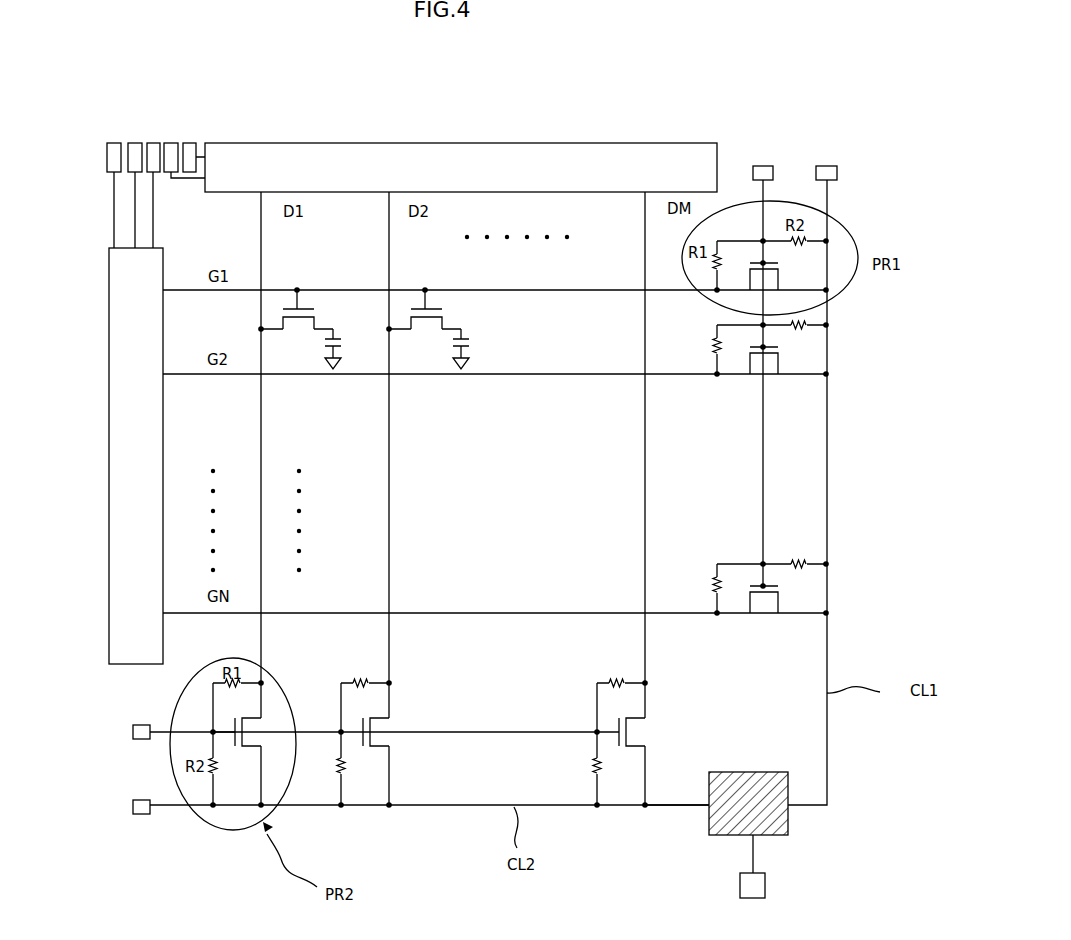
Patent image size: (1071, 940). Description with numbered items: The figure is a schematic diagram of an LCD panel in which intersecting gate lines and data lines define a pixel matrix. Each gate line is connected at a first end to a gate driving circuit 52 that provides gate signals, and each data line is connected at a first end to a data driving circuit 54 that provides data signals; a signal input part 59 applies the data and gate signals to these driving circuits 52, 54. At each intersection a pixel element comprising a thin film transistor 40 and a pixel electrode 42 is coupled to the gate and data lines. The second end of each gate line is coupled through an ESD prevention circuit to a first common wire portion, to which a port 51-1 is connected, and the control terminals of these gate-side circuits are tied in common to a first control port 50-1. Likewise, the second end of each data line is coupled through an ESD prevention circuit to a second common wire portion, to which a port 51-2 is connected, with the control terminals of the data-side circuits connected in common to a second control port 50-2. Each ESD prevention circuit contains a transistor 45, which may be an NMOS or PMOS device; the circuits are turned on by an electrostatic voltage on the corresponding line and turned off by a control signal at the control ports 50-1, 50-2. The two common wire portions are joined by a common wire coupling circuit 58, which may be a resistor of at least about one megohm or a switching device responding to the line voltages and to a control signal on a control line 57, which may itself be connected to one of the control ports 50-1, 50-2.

The thin film transistor 40 is at (447, 305).
The pixel electrode 42 is at (477, 335).
The transistor 45 is at (803, 267).
The first control port 50-1 is at (761, 166).
The second control port 50-2 is at (140, 725).
The port 51-1 is at (826, 166).
The port 51-2 is at (137, 800).
The gate driving circuit 52 is at (108, 342).
The data driving circuit 54 is at (597, 142).
The control line 57 is at (752, 879).
The common wire coupling circuit 58 is at (801, 813).
The signal input part 59 is at (162, 123).